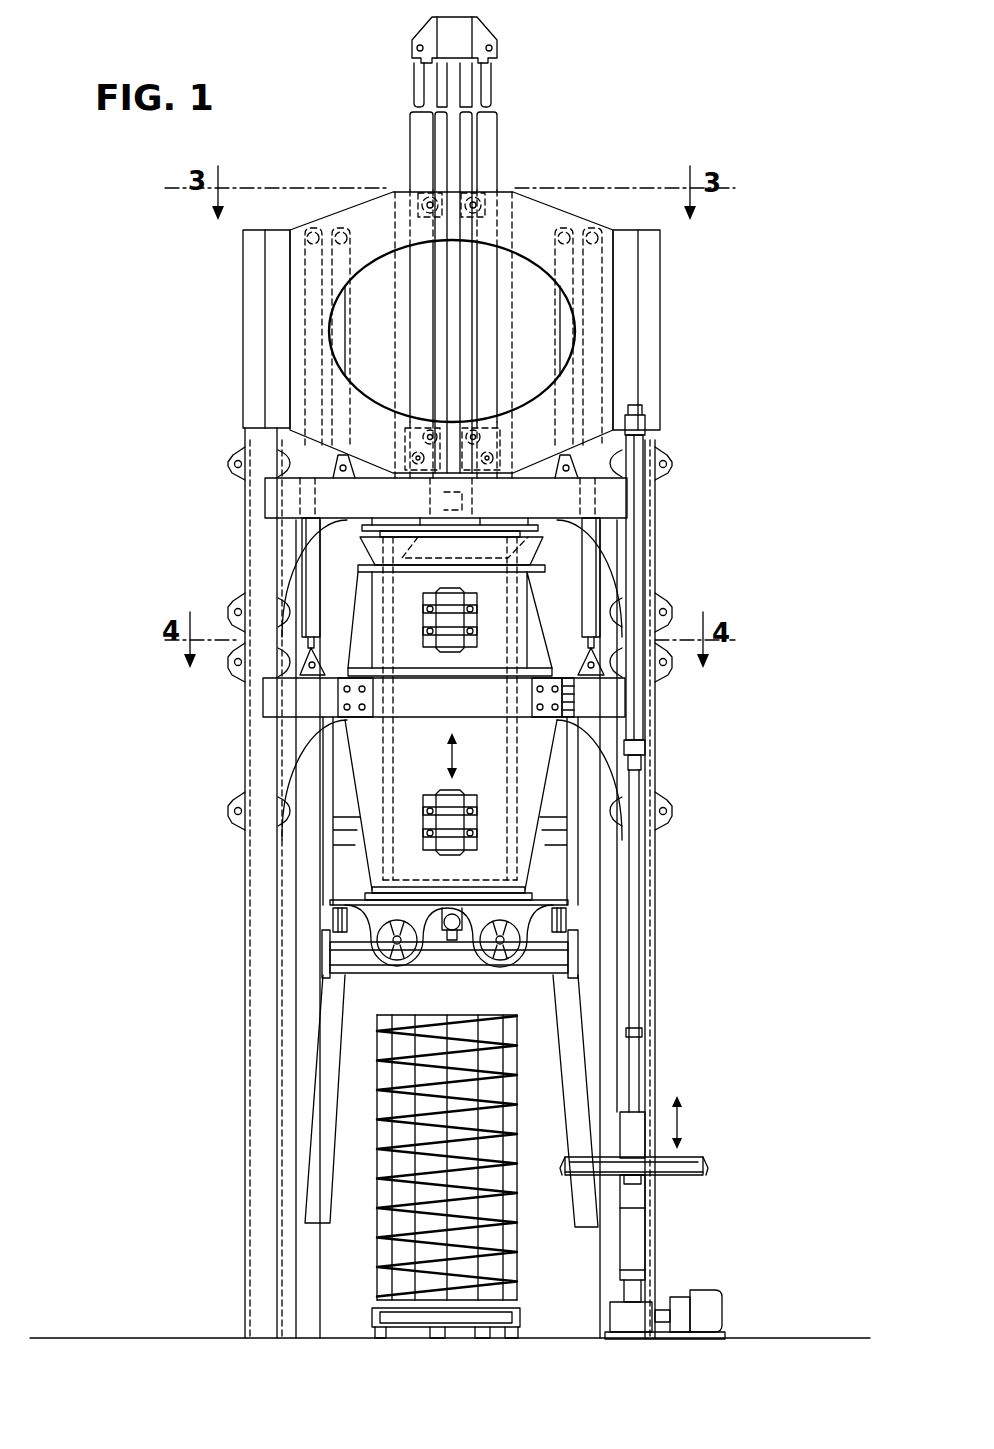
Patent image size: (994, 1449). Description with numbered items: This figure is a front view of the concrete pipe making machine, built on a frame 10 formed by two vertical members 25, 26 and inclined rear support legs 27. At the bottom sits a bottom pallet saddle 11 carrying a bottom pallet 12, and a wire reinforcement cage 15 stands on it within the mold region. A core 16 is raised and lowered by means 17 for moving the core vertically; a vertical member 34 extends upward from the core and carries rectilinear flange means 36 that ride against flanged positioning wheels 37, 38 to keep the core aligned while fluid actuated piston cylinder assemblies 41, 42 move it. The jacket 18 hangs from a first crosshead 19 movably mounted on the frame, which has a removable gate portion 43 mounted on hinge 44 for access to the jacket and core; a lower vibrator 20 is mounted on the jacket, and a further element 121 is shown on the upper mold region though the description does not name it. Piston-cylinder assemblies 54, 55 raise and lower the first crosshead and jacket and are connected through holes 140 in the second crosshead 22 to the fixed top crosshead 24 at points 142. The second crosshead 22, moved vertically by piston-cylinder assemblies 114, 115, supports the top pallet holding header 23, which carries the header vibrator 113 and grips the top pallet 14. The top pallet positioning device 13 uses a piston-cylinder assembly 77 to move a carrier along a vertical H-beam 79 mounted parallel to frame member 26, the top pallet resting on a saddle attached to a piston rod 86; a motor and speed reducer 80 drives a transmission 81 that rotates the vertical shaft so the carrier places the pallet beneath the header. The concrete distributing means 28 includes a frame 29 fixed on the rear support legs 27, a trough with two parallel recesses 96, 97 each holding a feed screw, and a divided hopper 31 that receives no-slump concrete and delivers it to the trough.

The frame 10 is at (240, 870).
The bottom pallet saddle 11 is at (375, 1328).
The bottom pallet 12 is at (520, 1328).
The top pallet positioning device 13 is at (650, 1235).
The top pallet 14 is at (702, 1170).
The wire reinforcement cage 15 is at (378, 1090).
The core 16 is at (395, 865).
The means for moving the core vertically 17 is at (503, 126).
The jacket 18 is at (522, 802).
The first crosshead 19 is at (285, 705).
The lower vibrator 20 is at (455, 790).
The second crosshead 22 is at (265, 497).
The top pallet holding header 23 is at (385, 770).
The fixed top crosshead 24 is at (243, 322).
The vertical frame member 25 is at (245, 978).
The vertical frame member 26 is at (657, 870).
The inclined rear support legs 27 is at (310, 1252).
The concrete distributing means 28 is at (549, 892).
The frame of concrete distributing means 29 is at (420, 972).
The divided hopper 31 is at (538, 762).
The vertical member 34 is at (437, 80).
The rectilinear flange means 36 is at (455, 132).
The flanged positioning wheel 37 is at (422, 196).
The flanged positioning wheel 38 is at (492, 196).
The fluid actuated piston cylinder assembly 41 is at (420, 152).
The fluid actuated piston cylinder assembly 42 is at (483, 156).
The removable gate portion 43 is at (412, 705).
The hinge 44 is at (572, 700).
The piston-cylinder assembly 54 is at (320, 590).
The piston-cylinder assembly 55 is at (592, 588).
The piston-cylinder assembly 77 is at (638, 1072).
The vertical H-beam 79 is at (640, 563).
The motor and speed reducer 80 is at (702, 1292).
The transmission 81 is at (645, 1329).
The piston rod 86 is at (640, 1182).
The recess 96 is at (383, 955).
The recess 97 is at (503, 955).
The header vibrator 113 is at (470, 500).
The piston-cylinder assembly 114 is at (350, 308).
The piston-cylinder assembly 115 is at (560, 307).
The upper clamp 121 is at (437, 623).
The holes 140 is at (330, 498).
The points 142 is at (322, 228).